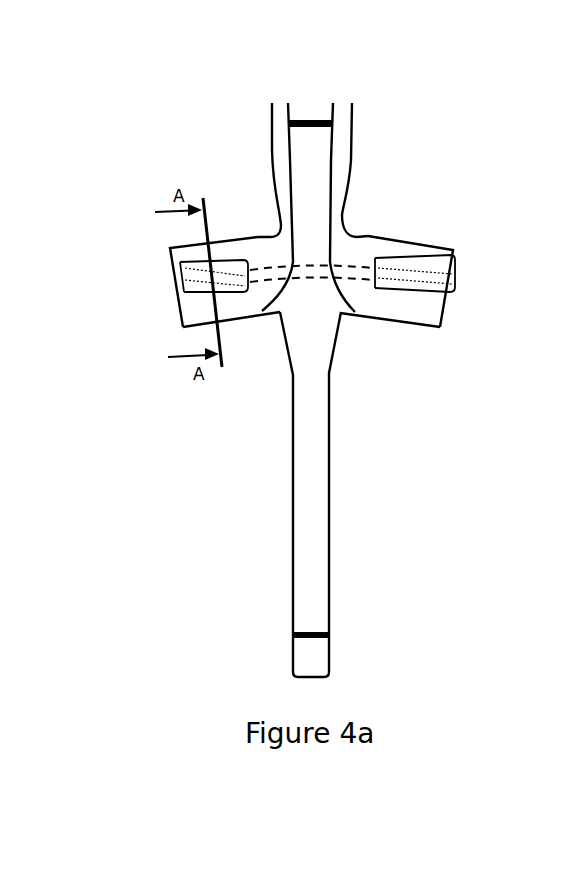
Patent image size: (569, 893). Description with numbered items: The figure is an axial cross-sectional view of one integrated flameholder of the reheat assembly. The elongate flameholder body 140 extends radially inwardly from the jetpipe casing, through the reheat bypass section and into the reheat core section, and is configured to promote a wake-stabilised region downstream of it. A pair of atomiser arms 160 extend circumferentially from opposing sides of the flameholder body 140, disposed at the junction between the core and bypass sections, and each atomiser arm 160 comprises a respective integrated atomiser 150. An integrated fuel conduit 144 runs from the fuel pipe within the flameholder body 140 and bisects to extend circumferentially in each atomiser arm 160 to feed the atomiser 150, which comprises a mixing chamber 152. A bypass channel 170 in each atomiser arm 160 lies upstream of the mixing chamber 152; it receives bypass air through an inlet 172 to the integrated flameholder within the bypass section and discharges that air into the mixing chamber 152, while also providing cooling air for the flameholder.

The flameholder body 140 is at (329, 458).
The integrated fuel conduit 144 is at (183, 288).
The integrated atomiser 150 is at (190, 313).
The mixing chamber 152 is at (433, 297).
The atomiser arm 160 is at (190, 247).
The bypass channel 170 is at (267, 250).
The inlet 172 is at (280, 112).